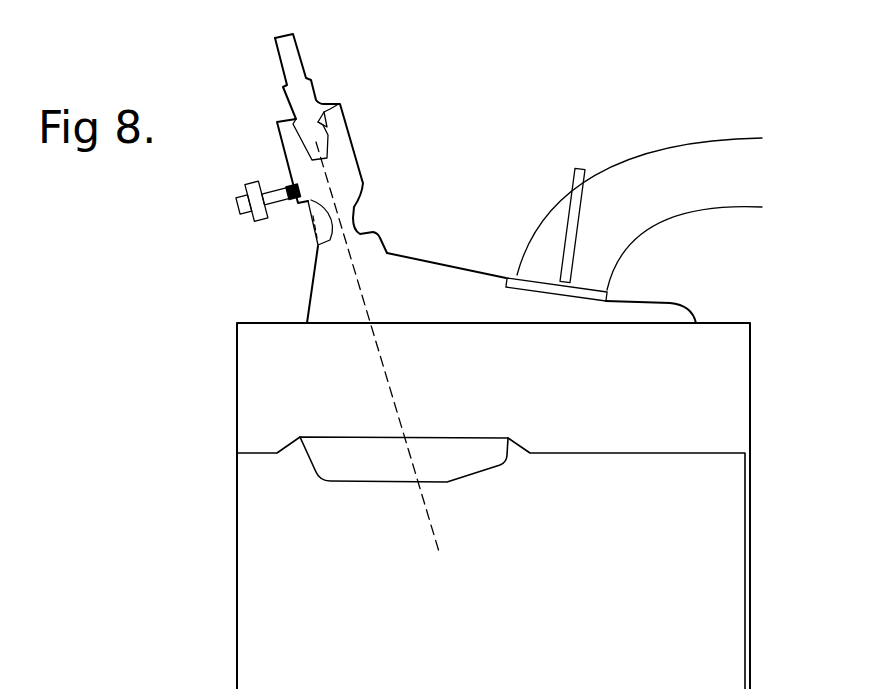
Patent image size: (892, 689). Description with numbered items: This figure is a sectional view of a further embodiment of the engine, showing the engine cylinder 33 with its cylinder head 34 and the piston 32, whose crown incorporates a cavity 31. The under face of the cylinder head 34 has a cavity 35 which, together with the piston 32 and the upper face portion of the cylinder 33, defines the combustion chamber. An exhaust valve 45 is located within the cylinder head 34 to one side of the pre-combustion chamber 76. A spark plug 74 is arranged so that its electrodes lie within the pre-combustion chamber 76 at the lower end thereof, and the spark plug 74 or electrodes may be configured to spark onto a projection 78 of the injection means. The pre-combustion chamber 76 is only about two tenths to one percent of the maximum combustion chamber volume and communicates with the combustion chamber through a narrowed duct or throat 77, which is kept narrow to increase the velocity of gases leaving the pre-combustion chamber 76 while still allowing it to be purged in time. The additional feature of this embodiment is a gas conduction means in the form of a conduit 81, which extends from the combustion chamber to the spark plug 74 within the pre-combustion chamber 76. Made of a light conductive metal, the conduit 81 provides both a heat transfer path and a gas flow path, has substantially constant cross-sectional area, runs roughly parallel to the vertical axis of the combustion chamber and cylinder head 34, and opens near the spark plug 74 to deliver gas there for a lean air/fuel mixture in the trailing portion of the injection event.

The cavity 31 is at (460, 457).
The piston 32 is at (491, 563).
The engine cylinder 33 is at (750, 408).
The cylinder head 34 is at (302, 307).
The cavity 35 is at (407, 270).
The exhaust valve 45 is at (587, 177).
The spark plug 74 is at (238, 207).
The pre-combustion chamber 76 is at (337, 162).
The throat 77 is at (348, 225).
The projection 78 is at (315, 132).
The conduit 81 is at (318, 238).